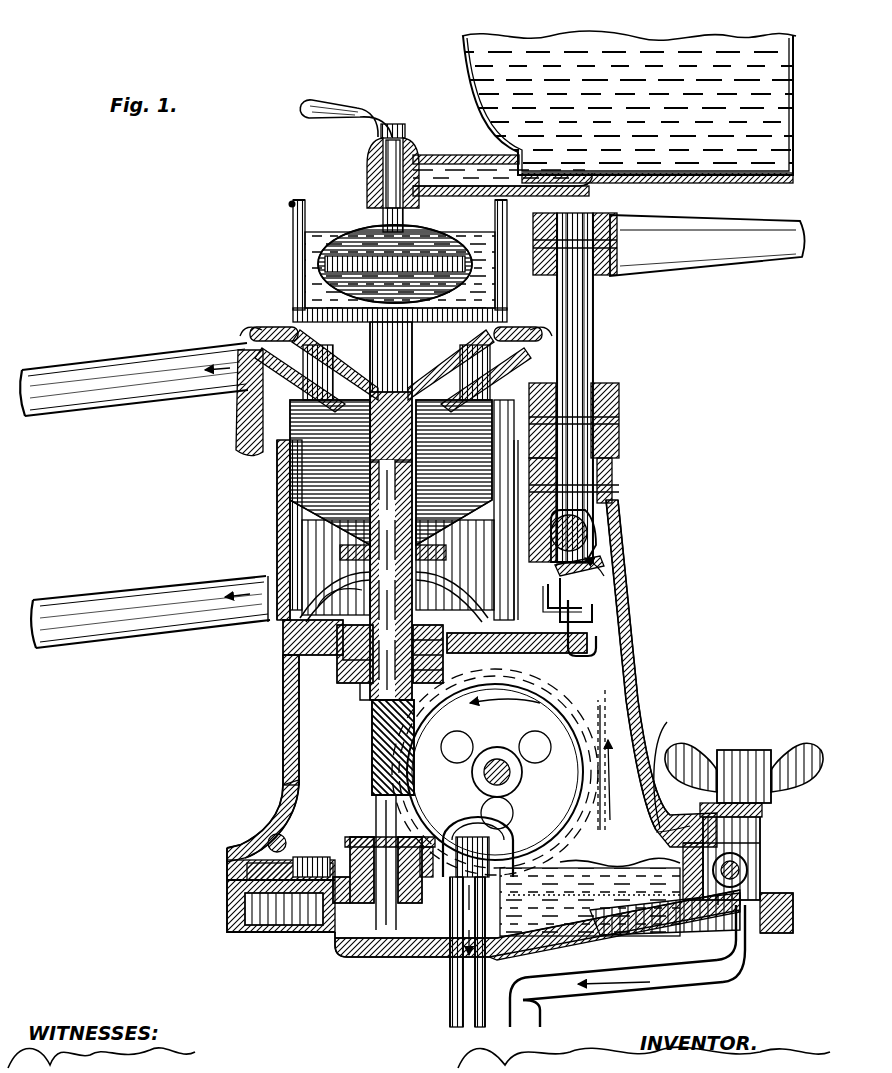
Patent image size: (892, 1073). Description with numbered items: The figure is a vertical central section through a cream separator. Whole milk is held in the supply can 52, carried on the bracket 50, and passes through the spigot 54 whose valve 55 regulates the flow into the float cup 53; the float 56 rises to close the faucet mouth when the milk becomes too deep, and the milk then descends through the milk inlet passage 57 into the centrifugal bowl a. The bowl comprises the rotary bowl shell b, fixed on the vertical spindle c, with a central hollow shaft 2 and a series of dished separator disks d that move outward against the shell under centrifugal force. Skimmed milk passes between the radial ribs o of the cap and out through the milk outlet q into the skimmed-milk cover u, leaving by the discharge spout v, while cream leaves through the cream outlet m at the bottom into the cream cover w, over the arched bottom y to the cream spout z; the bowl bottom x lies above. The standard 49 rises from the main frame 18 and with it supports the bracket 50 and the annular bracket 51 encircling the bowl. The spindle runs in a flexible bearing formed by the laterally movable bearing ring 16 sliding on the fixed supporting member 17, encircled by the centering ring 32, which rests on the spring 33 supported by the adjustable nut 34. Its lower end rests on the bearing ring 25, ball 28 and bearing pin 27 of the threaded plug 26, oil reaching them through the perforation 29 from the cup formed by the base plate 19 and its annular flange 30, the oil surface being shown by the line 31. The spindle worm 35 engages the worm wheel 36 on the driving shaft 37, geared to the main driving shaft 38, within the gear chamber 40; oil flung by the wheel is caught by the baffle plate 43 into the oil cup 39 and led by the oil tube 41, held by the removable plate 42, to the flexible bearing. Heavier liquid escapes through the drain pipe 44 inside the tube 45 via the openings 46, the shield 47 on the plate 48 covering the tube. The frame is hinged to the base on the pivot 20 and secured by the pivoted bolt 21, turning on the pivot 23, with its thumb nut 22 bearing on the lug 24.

The supply can 52 is at (492, 68).
The spigot 54 is at (452, 160).
The valve 55 is at (401, 132).
The float cup 53 is at (305, 218).
The float 56 is at (352, 240).
The milk inlet passage 57 is at (470, 322).
The centrifugal separator bowl a is at (440, 552).
The milk outlet q is at (300, 328).
The radial depending ribs o is at (280, 330).
The bowl shell b is at (284, 486).
The separator disks d is at (296, 498).
The central hollow shaft 2 is at (283, 468).
The cream cover w is at (300, 562).
The cream outlet m is at (340, 542).
The bowl bottom arch x is at (394, 597).
The bearing ring 16 is at (330, 600).
The skimmed milk discharge spout v is at (82, 370).
The cream outlet spout z is at (190, 622).
The arched bottom y is at (278, 622).
The annular bracket 51 is at (240, 421).
The standard 49 is at (595, 320).
The skimmed-milk cover u is at (558, 482).
The bracket 50 is at (722, 258).
The gear chamber 40 is at (612, 640).
The main driving shaft 38 is at (596, 533).
The baffle plate 43 is at (606, 566).
The oil cup 39 is at (594, 590).
The oil tube 41 is at (588, 604).
The removable plate 42 is at (572, 650).
The fixed supporting member 17 is at (343, 668).
The centering ring 32 is at (350, 690).
The spring 33 is at (445, 660).
The nut 34 is at (362, 700).
The spindle c is at (361, 715).
The main frame 18 is at (283, 720).
The pivot 20 is at (250, 832).
The oil level line 31 is at (300, 850).
The annular flange 30 is at (227, 853).
The base plate 19 is at (232, 895).
The ball 28 is at (332, 862).
The perforation 29 is at (322, 938).
The openings 46 is at (350, 742).
The pivoted bolt 21 is at (750, 857).
The pivot 23 is at (750, 880).
The thumb nut 22 is at (718, 768).
The lug 24 is at (655, 820).
The plate 48 is at (578, 895).
The worm wheel 36 is at (495, 772).
The driving shaft 37 is at (488, 778).
The shield 47 is at (514, 822).
The tube 45 is at (510, 846).
The drain pipe 44 is at (462, 1010).
The worm 35 is at (372, 790).
The bearing pin 27 is at (398, 932).
The threaded plug 26 is at (372, 930).
The bearing ring 25 is at (366, 845).